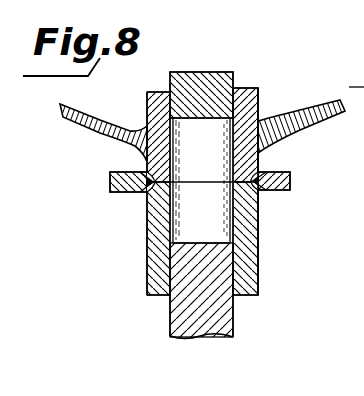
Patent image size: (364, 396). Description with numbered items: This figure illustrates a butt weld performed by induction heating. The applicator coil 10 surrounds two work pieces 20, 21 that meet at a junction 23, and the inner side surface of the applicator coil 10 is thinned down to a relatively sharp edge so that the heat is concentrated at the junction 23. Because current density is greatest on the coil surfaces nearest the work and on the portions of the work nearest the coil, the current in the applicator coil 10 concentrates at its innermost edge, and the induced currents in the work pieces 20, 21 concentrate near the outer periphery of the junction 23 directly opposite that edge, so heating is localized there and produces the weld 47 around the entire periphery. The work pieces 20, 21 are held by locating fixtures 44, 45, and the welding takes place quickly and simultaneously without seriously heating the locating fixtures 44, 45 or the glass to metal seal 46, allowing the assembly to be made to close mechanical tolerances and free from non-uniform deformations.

The applicator coil 10 is at (110, 178).
The work piece 20 is at (259, 262).
The work piece 21 is at (258, 103).
The junction 23 is at (212, 182).
The locating fixture 44 is at (222, 72).
The locating fixture 45 is at (170, 318).
The glass to metal seal 46 is at (136, 131).
The cutting edge notch 47 is at (143, 191).